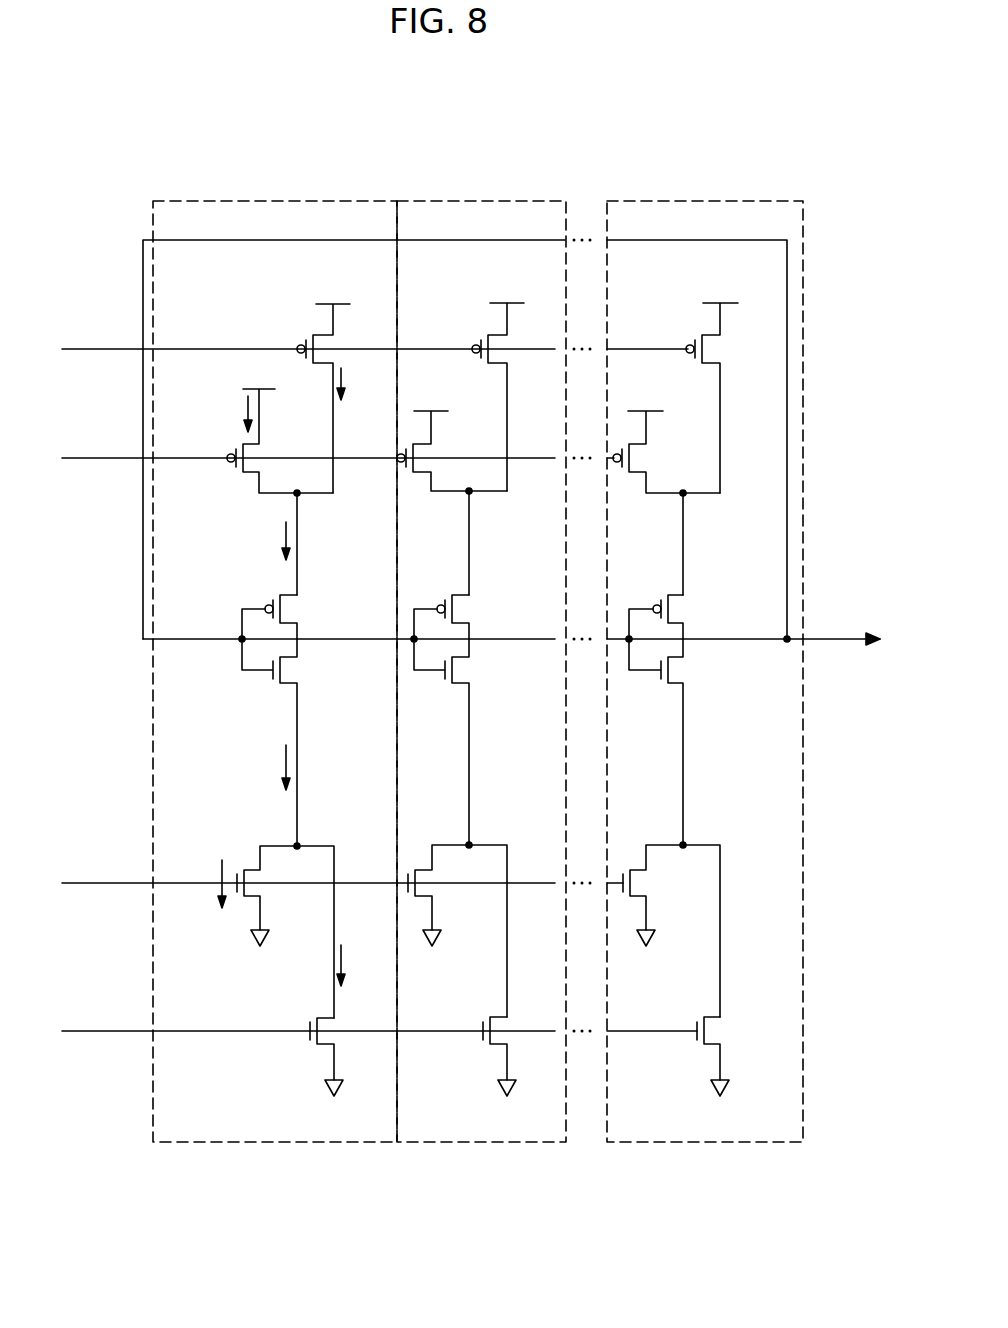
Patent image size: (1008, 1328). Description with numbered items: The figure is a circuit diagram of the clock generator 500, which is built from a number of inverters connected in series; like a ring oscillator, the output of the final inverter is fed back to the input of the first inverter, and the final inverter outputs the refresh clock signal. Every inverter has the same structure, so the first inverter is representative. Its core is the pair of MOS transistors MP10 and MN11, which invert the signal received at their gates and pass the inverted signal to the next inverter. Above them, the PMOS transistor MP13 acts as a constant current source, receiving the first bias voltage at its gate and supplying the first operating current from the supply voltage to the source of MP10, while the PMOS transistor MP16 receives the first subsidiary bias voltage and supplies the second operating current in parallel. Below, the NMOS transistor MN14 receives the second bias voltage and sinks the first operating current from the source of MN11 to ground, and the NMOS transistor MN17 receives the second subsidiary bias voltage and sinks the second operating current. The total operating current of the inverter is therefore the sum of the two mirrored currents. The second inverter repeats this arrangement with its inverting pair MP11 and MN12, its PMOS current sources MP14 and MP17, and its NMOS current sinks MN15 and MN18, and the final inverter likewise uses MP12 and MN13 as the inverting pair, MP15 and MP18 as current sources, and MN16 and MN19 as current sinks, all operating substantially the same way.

The clock generator 500 is at (768, 166).
The PMOS transistor MP10 is at (295, 617).
The NMOS transistor MN11 is at (297, 742).
The PMOS transistor of inverter IN_2 MP11 is at (467, 617).
The NMOS transistor of inverter IN_2 MN12 is at (469, 742).
The PMOS transistor of inverter IN_n MP12 is at (682, 617).
The transistor MN13 is at (683, 742).
The PMOS transistor MP13 is at (280, 429).
The PMOS current source transistor (Vp) IN_2 MP14 is at (452, 439).
The PMOS current source transistor (Vp) IN_n MP15 is at (666, 440).
The PMOS transistor MP16 is at (341, 386).
The PMOS current source transistor (Vp2) IN_2 MP17 is at (515, 385).
The PMOS current source transistor (Vp2) IN_n MP18 is at (729, 386).
The NMOS transistor MN14 is at (285, 932).
The NMOS current sink transistor (Vn) IN_2 MN15 is at (457, 931).
The transistor MN16 is at (671, 931).
The NMOS transistor MN17 is at (349, 1067).
The NMOS current sink transistor (Vn2) IN_2 MN18 is at (522, 1067).
The NMOS current sink transistor (Vn2) IN_n MN19 is at (736, 1070).